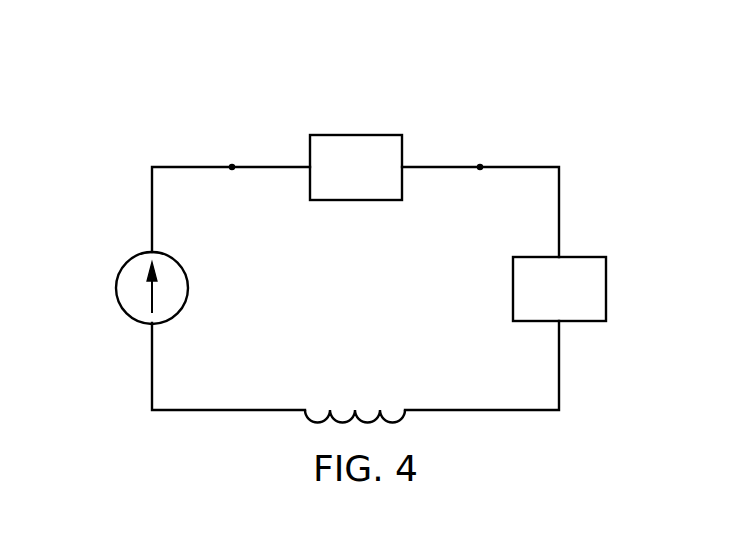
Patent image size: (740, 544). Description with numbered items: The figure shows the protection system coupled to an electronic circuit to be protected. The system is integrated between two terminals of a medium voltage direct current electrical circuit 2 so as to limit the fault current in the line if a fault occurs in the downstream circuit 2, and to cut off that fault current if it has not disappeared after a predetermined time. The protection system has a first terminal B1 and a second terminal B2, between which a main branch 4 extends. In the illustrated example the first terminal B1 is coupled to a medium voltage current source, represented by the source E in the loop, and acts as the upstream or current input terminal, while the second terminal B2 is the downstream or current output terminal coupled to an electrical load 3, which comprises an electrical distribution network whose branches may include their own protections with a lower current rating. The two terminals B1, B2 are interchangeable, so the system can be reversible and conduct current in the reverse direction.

The electrical circuit 2 is at (345, 228).
The electrical load 3 is at (590, 322).
The main branch 4 is at (358, 135).
The first terminal B1 is at (233, 163).
The second terminal B2 is at (481, 163).
The voltage source E is at (139, 288).